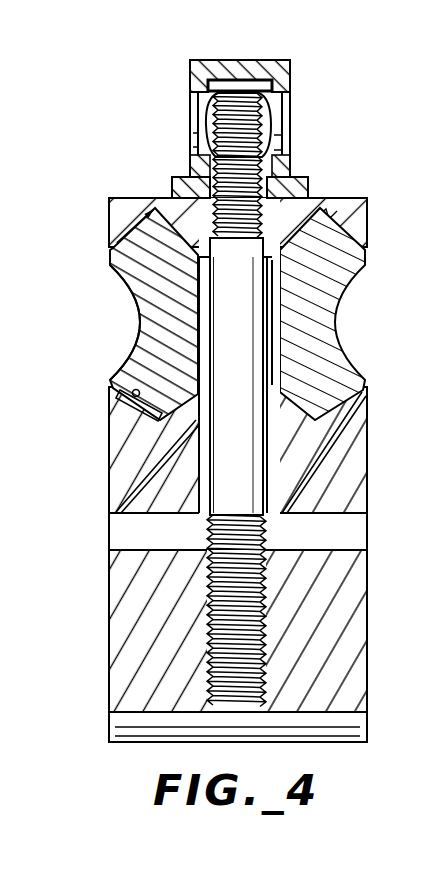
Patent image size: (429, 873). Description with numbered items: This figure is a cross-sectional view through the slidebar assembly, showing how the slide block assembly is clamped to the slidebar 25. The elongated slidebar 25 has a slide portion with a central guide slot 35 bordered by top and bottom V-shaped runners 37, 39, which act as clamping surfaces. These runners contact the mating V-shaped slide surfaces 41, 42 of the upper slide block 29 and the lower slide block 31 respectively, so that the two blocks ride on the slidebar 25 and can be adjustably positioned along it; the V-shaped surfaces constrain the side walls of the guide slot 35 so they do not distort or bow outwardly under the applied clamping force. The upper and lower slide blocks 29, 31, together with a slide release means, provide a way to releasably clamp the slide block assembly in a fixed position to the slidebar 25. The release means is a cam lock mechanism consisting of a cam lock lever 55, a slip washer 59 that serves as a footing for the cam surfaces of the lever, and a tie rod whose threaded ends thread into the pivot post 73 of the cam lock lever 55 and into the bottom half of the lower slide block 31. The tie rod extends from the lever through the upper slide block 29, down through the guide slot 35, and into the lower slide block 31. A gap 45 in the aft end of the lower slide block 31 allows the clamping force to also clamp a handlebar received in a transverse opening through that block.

The slidebar 25 is at (226, 314).
The upper slide block 29 is at (333, 202).
The lower slide block 31 is at (120, 492).
The central guide slot 35 is at (195, 338).
The top V-shaped runner 37 is at (130, 267).
The bottom V-shaped runner 39 is at (143, 407).
The V-shaped slide surface 41 is at (130, 200).
The V-shaped slide surface 42 is at (127, 400).
The gap 45 is at (120, 535).
The cam lock lever 55 is at (275, 60).
The slip washer 59 is at (303, 190).
The pivot post 73 is at (280, 120).